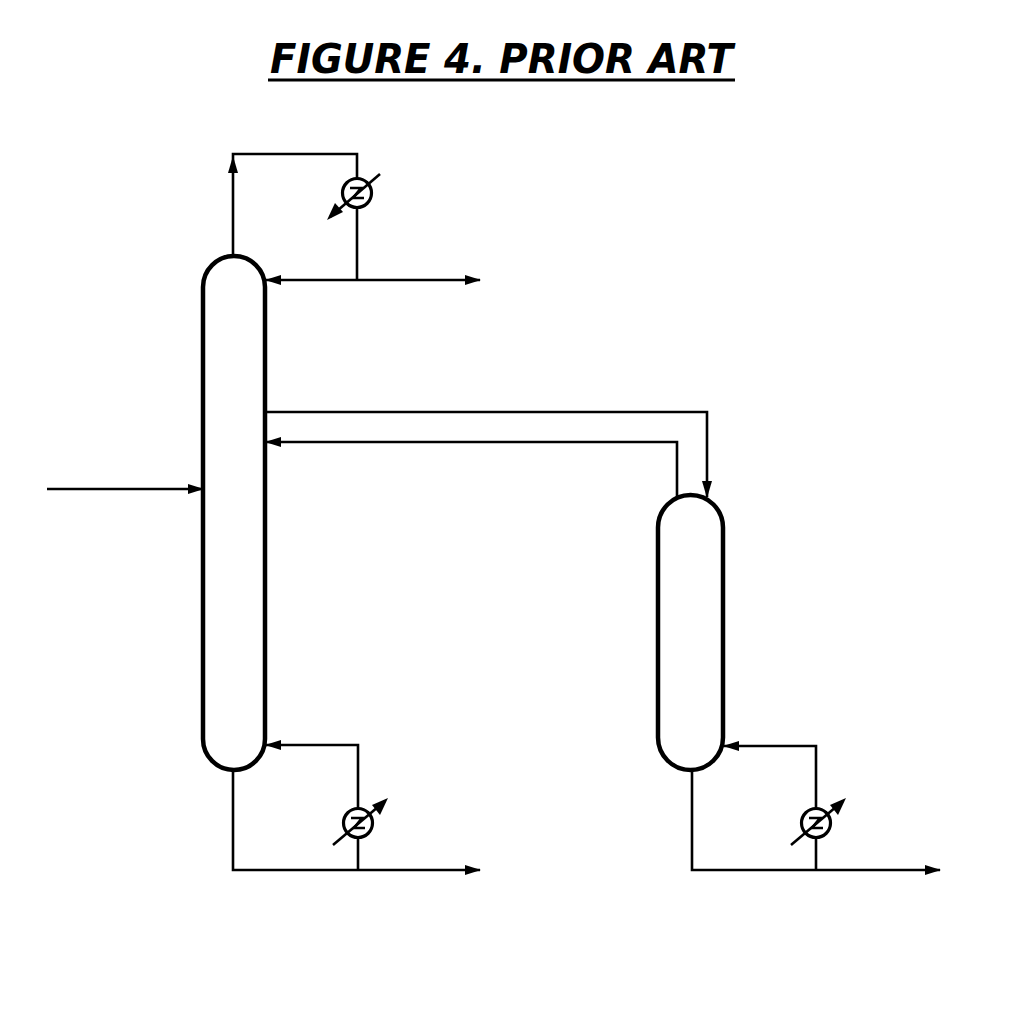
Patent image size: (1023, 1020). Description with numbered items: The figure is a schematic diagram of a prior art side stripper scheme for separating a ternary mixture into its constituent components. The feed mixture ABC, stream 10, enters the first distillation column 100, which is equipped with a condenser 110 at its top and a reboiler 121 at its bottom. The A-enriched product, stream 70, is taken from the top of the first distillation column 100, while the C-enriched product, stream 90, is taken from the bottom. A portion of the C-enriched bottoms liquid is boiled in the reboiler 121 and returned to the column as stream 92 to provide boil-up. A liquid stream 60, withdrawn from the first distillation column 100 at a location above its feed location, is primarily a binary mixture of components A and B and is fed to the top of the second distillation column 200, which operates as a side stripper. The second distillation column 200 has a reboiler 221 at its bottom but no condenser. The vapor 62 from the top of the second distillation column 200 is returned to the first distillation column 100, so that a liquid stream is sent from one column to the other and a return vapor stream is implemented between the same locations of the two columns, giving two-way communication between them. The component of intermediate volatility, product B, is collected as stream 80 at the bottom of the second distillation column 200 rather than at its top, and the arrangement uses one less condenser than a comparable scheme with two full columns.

The feed mixture stream 10 is at (138, 490).
The liquid stream 60 is at (573, 412).
The vapor stream 62 is at (573, 442).
The A-enriched product stream 70 is at (410, 278).
The product B stream 80 is at (868, 871).
The C-enriched product stream 90 is at (415, 871).
The boiled bottoms stream 92 is at (322, 744).
The first distillation column 100 is at (266, 644).
The condenser 110 is at (377, 185).
The reboiler 121 is at (378, 818).
The second distillation column 200 is at (725, 683).
The reboiler 221 is at (838, 818).